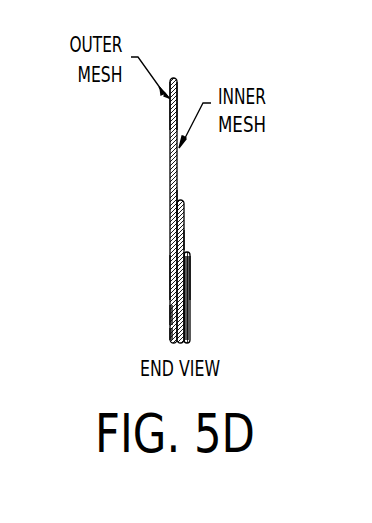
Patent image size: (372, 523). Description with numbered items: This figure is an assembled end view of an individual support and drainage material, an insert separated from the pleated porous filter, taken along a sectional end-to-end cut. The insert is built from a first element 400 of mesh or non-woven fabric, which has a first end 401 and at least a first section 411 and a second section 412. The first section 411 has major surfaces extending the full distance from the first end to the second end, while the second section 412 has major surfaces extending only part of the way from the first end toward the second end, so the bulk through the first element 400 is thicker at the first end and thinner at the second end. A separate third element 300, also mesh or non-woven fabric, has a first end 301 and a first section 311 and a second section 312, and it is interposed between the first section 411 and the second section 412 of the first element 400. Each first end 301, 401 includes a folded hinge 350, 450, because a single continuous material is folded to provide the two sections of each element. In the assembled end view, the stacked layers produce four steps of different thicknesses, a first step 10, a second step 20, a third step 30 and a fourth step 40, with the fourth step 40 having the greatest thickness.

The first step 10 is at (170, 150).
The second step 20 is at (170, 180).
The third step 30 is at (170, 232).
The fourth step 40 is at (188, 287).
The third element 300 is at (178, 198).
The first end of third element 301 is at (170, 325).
The first section of third element 311 is at (178, 168).
The second section of third element 312 is at (185, 240).
The folded hinge of third element 350 is at (110, 303).
The first element 400 is at (150, 266).
The first end of first element 401 is at (170, 333).
The first section of first element 411 is at (170, 113).
The second section of first element 412 is at (190, 295).
The folded hinge of first element 450 is at (105, 342).